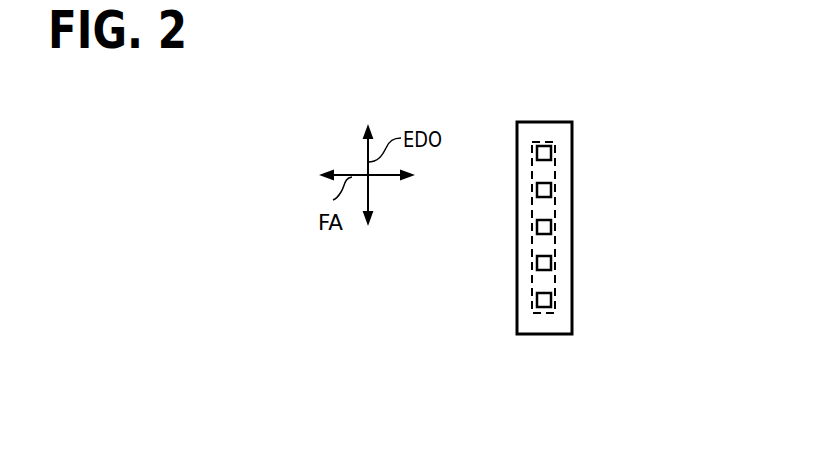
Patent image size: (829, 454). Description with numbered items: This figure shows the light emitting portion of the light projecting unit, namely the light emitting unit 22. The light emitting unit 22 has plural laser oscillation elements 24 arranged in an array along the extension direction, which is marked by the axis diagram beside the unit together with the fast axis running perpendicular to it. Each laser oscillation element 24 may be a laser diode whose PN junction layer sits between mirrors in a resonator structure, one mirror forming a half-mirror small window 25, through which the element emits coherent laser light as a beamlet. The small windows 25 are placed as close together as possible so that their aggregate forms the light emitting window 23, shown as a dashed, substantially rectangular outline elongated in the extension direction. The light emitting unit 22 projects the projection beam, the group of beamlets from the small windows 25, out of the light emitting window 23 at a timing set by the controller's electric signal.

The light emitting unit 22 is at (556, 122).
The light emitting window 23 is at (517, 287).
The laser oscillation element 24 is at (544, 226).
The small window 25 is at (551, 153).